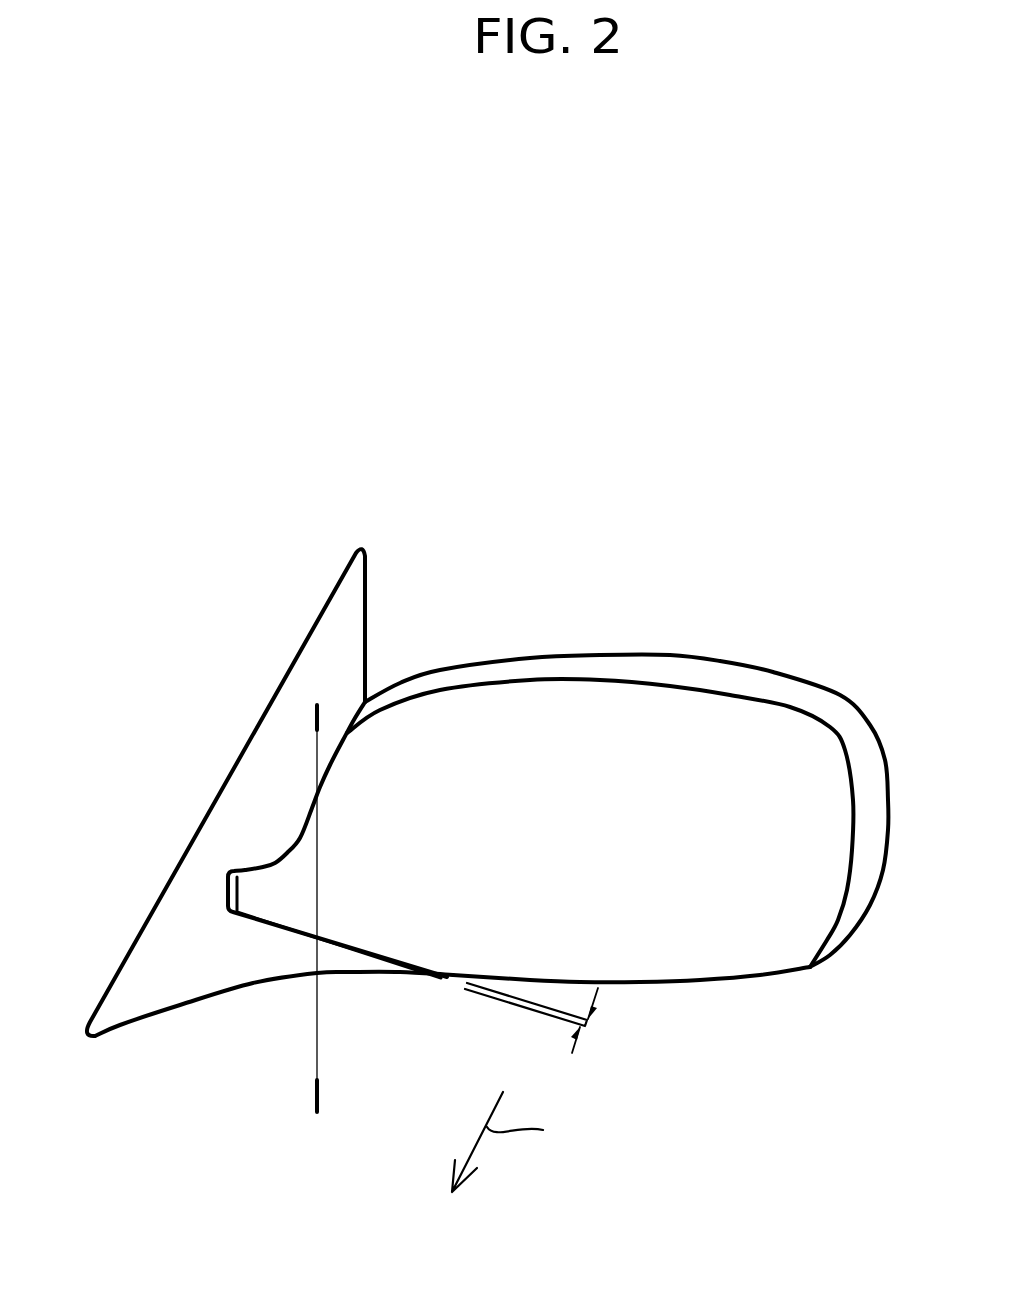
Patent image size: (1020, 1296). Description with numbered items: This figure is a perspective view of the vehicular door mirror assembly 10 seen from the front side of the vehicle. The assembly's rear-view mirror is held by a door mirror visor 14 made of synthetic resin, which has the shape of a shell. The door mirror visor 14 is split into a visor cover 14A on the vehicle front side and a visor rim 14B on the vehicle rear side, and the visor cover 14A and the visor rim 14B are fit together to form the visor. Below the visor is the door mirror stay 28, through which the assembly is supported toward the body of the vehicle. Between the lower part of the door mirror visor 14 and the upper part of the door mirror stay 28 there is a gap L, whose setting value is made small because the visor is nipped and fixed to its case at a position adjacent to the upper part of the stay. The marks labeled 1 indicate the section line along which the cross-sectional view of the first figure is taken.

The vehicular door mirror assembly 10 is at (578, 372).
The door mirror visor 14 is at (842, 696).
The visor cover 14A is at (578, 705).
The visor rim 14B is at (702, 670).
The door mirror stay 28 is at (145, 948).
The section line of FIG. 1 is at (300, 1100).
The gap L is at (590, 1022).